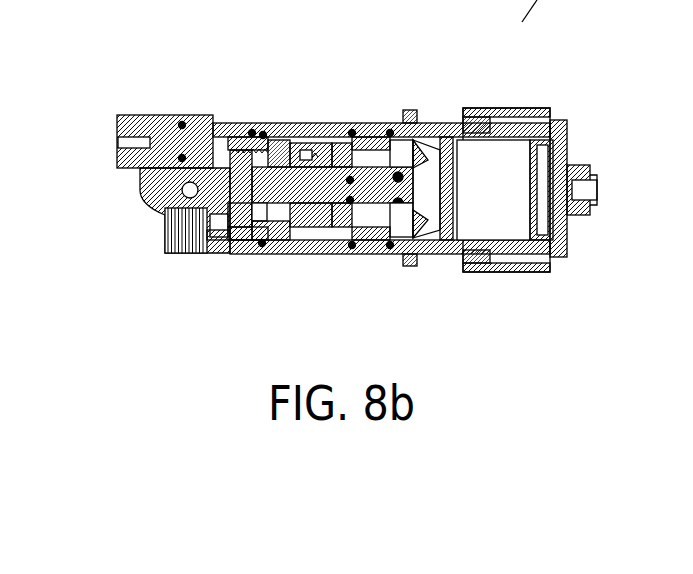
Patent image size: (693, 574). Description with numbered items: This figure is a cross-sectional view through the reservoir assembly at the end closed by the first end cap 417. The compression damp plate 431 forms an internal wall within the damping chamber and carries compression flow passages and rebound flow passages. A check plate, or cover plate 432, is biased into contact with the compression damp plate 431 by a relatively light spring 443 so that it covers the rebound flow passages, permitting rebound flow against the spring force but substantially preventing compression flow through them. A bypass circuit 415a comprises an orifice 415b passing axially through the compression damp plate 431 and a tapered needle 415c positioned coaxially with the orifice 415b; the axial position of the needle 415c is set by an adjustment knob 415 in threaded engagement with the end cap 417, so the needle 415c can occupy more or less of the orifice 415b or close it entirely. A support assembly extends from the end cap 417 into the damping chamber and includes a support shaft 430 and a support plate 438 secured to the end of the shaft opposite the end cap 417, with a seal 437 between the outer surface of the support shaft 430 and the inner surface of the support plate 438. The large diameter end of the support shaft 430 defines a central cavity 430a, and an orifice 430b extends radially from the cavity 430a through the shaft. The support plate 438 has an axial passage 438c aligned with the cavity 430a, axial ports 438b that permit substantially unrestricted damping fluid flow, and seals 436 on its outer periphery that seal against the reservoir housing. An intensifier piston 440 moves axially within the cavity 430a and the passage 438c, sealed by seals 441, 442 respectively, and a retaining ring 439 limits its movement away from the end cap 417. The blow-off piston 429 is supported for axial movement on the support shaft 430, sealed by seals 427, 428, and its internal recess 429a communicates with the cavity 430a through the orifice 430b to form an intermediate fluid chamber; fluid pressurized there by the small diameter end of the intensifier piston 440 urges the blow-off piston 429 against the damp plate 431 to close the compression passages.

The adjustment knob 415 is at (126, 116).
The bypass circuit 415a is at (232, 115).
The orifice 415b is at (268, 121).
The tapered needle 415c is at (248, 118).
The first end cap 417 is at (148, 246).
The seal 427 is at (292, 121).
The seal 428 is at (302, 251).
The blow-off piston 429 is at (330, 126).
The internal recess 429a is at (314, 132).
The support shaft 430 is at (240, 251).
The central cavity 430a is at (374, 128).
The orifice 430b is at (352, 127).
The compression damp plate 431 is at (253, 251).
The cover plate 432 is at (225, 251).
The seals 436 is at (377, 254).
The seal 437 is at (355, 251).
The support plate 438 is at (381, 252).
The axial ports 438b is at (423, 118).
The passage 438c is at (473, 272).
The retaining ring 439 is at (443, 260).
The intensifier piston 440 is at (323, 251).
The seal 441 is at (337, 251).
The seal 442 is at (418, 260).
The spring 443 is at (212, 251).